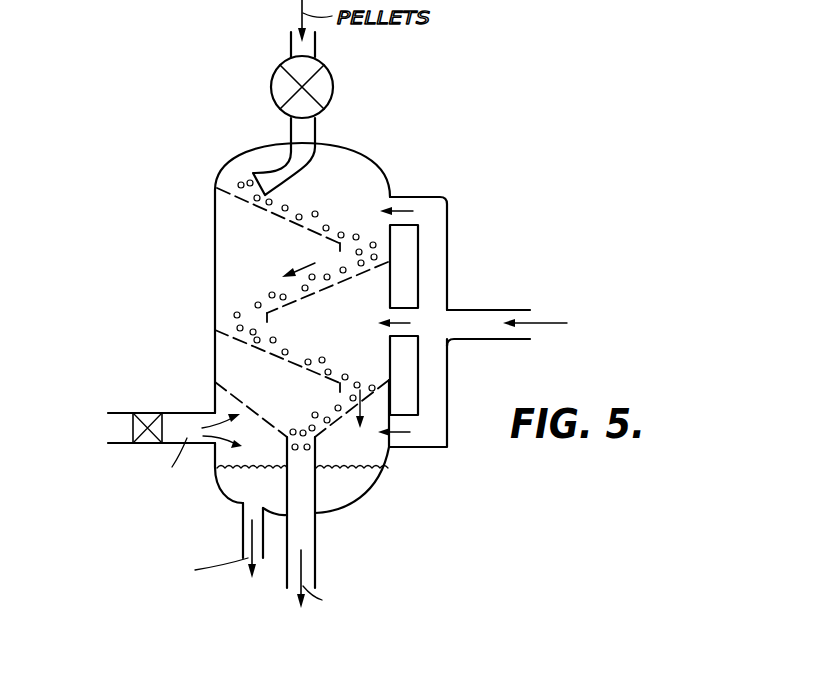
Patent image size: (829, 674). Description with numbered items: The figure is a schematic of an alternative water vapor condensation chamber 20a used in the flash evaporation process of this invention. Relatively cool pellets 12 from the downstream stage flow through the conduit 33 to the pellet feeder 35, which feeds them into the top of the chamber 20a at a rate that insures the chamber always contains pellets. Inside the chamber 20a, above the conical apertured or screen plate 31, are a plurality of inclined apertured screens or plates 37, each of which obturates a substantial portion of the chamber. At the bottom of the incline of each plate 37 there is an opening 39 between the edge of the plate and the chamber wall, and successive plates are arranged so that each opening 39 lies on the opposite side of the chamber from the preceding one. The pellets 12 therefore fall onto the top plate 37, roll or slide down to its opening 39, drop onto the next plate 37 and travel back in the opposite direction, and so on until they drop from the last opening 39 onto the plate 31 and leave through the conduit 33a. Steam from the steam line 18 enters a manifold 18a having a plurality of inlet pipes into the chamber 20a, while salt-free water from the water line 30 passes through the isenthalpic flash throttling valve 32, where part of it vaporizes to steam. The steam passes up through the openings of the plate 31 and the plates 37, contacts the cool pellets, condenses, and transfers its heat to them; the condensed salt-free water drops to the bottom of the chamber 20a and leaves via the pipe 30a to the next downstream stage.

The pellets 12 is at (328, 226).
The steam line 18 is at (477, 309).
The manifold 18a is at (447, 243).
The water vapor condensation chamber 20a is at (362, 158).
The water line 30 is at (185, 413).
The pipe 30a is at (242, 537).
The conical apertured or screen plate 31 is at (338, 423).
The isenthalpic flash throttling valve 32 is at (151, 413).
The conduit 33 is at (289, 48).
The conduit 33a is at (316, 542).
The pellet feeder 35 is at (334, 98).
The inclined apertured screens or plates 37 is at (260, 207).
The opening 39 is at (405, 320).